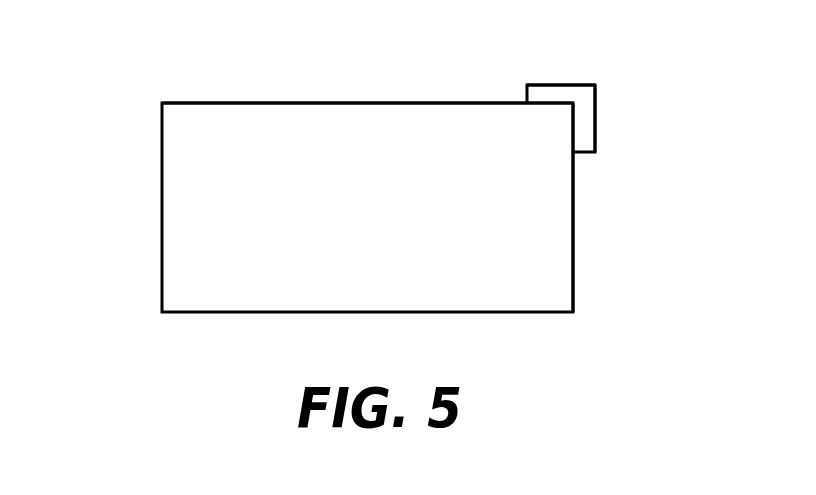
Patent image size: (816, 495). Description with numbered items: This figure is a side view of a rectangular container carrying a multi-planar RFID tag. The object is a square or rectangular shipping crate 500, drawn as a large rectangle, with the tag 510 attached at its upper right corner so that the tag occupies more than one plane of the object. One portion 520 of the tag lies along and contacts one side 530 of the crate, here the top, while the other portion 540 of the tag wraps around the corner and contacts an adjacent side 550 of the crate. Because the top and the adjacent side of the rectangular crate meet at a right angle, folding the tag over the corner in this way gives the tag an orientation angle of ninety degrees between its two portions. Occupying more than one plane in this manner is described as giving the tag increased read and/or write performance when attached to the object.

The shipping crate 500 is at (150, 72).
The tag 510 is at (603, 73).
The one portion of the tag 520 is at (548, 83).
The one side 530 is at (297, 101).
The other portion of the tag 540 is at (597, 127).
The adjacent side 550 is at (575, 262).